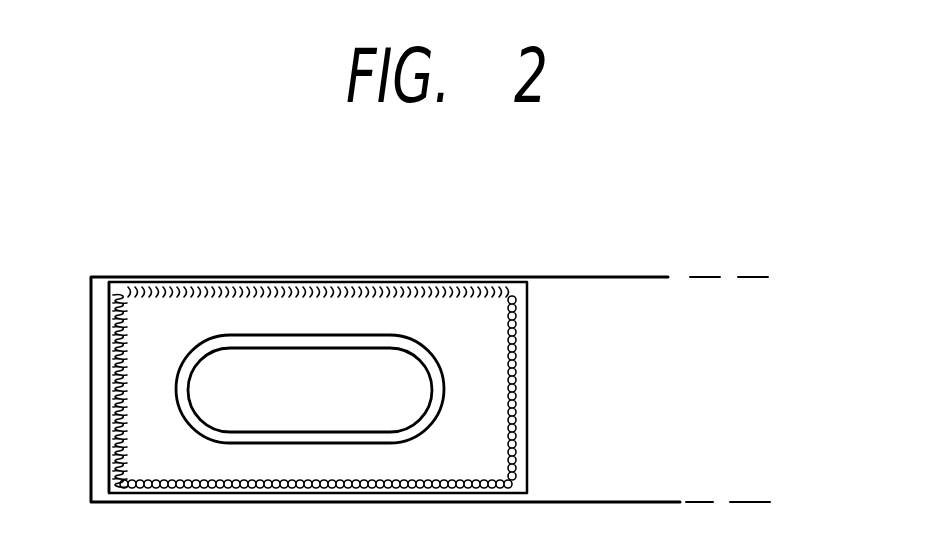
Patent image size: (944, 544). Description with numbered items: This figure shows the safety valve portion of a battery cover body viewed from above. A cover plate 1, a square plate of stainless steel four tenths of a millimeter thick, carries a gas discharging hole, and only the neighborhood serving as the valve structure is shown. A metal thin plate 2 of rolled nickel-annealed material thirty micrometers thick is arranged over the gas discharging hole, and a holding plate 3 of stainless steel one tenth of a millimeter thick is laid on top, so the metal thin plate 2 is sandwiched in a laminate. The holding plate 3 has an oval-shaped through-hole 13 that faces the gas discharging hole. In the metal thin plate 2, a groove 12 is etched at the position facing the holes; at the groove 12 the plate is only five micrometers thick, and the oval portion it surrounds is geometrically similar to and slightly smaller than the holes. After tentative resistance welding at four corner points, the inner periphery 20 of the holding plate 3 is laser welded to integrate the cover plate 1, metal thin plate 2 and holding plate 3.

The cover plate 1 is at (580, 303).
The metal thin plate 2 is at (465, 393).
The holding plate 3 is at (168, 310).
The groove 12 is at (308, 340).
The through-hole 13 is at (370, 365).
The inner periphery of the holding plate 20 is at (583, 450).